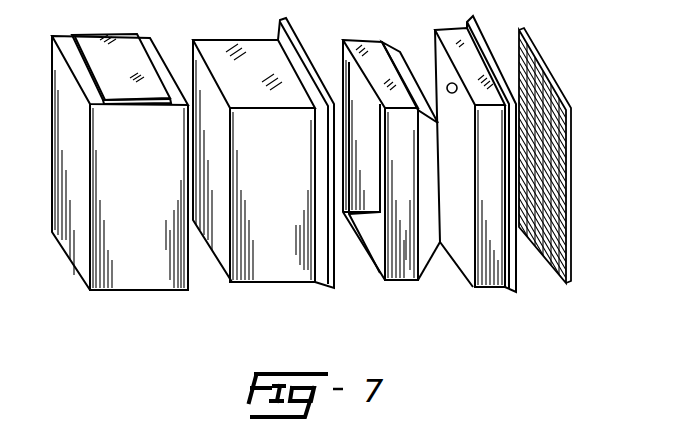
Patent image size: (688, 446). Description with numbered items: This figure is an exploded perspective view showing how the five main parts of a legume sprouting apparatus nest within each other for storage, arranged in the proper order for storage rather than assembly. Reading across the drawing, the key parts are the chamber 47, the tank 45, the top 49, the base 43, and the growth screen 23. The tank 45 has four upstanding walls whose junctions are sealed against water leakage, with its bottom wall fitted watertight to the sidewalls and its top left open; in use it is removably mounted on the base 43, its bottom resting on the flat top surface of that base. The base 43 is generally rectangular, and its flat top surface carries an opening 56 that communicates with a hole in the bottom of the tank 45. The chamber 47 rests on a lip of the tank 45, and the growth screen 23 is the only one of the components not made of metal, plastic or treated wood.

The chamber 47 is at (150, 291).
The tank 45 is at (288, 283).
The top 49 is at (410, 282).
The base 43 is at (500, 288).
The opening 56 is at (448, 84).
The growth screen 23 is at (566, 285).